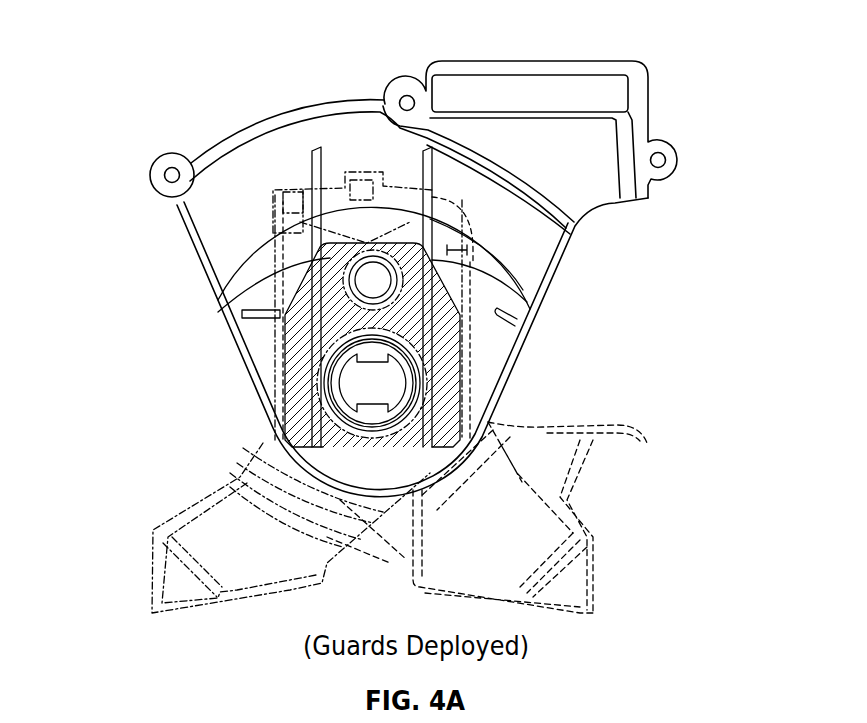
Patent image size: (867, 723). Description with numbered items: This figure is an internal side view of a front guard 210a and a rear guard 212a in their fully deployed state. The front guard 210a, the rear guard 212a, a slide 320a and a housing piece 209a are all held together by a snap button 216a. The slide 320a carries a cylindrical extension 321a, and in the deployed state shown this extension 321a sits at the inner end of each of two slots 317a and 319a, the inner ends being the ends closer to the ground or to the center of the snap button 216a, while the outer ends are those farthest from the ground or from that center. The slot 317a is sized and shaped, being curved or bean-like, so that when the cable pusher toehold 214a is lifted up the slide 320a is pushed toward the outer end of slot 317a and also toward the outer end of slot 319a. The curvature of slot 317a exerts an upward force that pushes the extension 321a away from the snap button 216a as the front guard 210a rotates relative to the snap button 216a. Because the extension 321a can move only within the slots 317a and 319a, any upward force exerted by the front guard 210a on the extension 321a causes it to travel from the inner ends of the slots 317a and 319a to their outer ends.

The housing piece 209a is at (540, 61).
The slot 319a is at (242, 313).
The slot 317a is at (505, 278).
The snap button 216a is at (343, 413).
The cylindrical extension 321a is at (333, 368).
The slide 320a is at (330, 378).
The cable pusher toehold 214a is at (618, 427).
The rear guard 212a is at (150, 596).
The front guard 210a is at (577, 578).